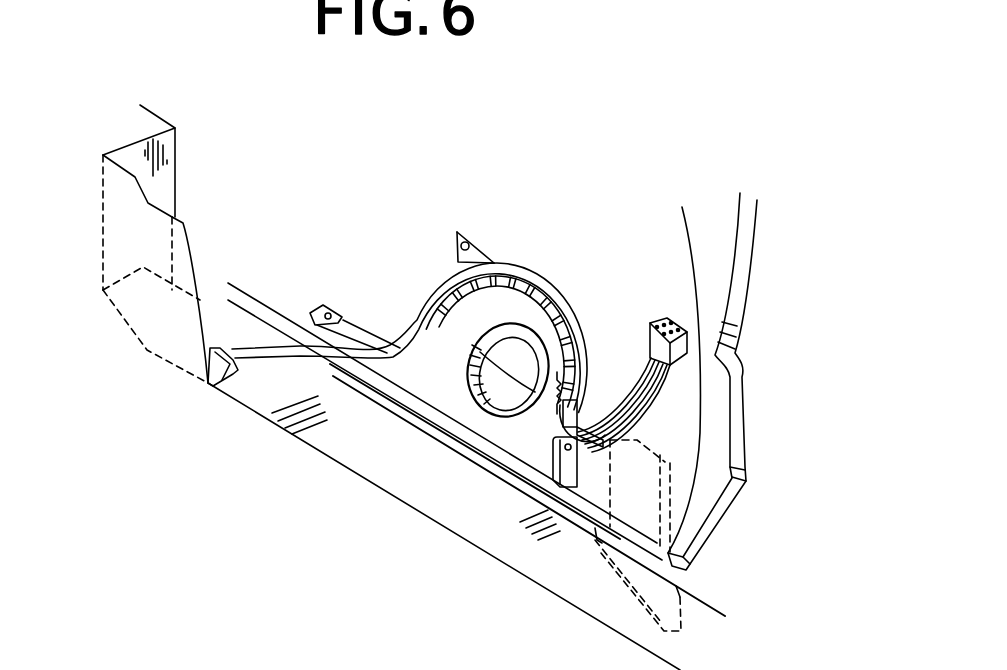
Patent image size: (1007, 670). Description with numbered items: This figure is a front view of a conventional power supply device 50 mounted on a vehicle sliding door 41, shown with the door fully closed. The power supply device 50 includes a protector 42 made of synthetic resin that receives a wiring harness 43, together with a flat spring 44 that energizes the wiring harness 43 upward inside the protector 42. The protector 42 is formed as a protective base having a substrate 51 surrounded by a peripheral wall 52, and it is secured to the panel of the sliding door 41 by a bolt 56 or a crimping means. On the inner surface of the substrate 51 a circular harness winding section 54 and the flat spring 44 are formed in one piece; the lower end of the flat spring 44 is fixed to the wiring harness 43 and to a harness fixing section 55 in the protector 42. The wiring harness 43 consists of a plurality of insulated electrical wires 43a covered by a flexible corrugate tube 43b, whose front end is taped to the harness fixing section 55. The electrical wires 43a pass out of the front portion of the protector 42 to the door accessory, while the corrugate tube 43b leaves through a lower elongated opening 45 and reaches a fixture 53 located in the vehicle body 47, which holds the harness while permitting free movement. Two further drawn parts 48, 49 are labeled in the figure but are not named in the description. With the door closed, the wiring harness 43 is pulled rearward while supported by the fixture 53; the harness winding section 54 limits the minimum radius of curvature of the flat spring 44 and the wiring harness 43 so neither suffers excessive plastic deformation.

The sliding door 41 is at (747, 482).
The protector 42 is at (533, 275).
The wiring harness 43 is at (418, 320).
The insulated electrical wires 43a is at (637, 362).
The corrugate tube 43b is at (550, 313).
The flat spring 44 is at (530, 343).
The lower elongated opening 45 is at (478, 437).
The vehicle body 47 is at (181, 182).
The side sill 48 is at (323, 433).
The mounting tab 49 is at (458, 258).
The power supply device 50 is at (513, 241).
The substrate 51 is at (537, 427).
The peripheral wall 52 is at (494, 259).
The fixture 53 is at (208, 386).
The harness winding section 54 is at (483, 388).
The harness fixing section 55 is at (477, 368).
The bolt 56 is at (457, 236).